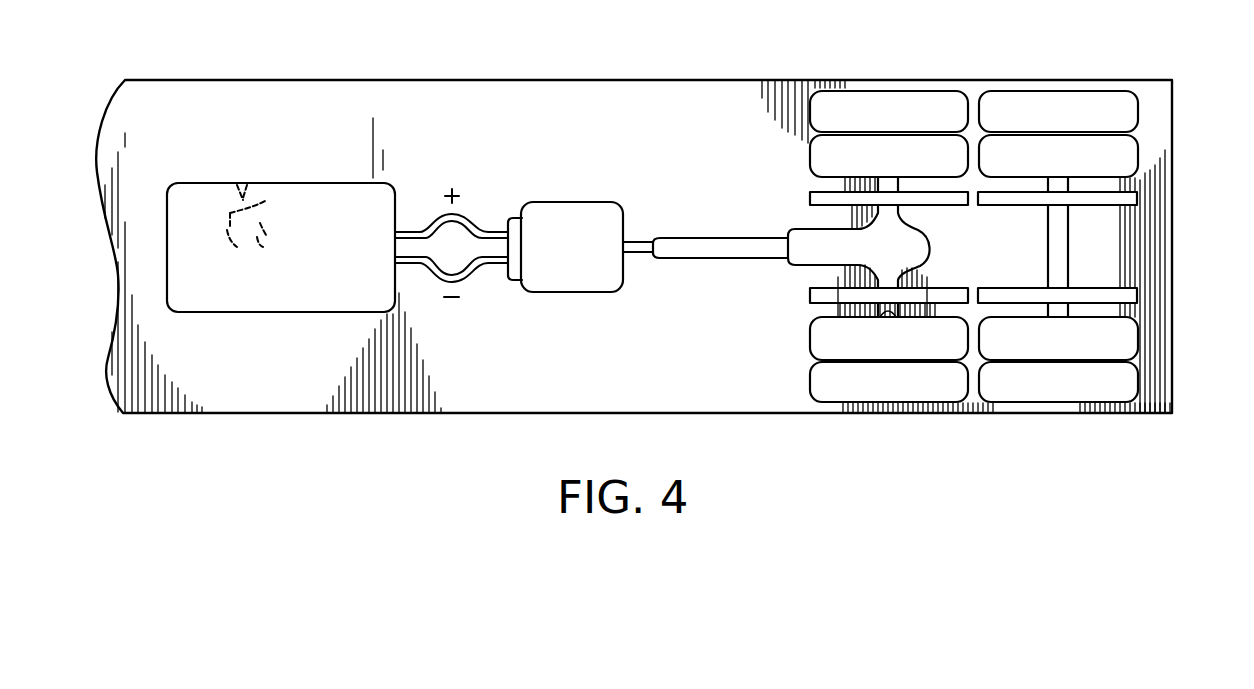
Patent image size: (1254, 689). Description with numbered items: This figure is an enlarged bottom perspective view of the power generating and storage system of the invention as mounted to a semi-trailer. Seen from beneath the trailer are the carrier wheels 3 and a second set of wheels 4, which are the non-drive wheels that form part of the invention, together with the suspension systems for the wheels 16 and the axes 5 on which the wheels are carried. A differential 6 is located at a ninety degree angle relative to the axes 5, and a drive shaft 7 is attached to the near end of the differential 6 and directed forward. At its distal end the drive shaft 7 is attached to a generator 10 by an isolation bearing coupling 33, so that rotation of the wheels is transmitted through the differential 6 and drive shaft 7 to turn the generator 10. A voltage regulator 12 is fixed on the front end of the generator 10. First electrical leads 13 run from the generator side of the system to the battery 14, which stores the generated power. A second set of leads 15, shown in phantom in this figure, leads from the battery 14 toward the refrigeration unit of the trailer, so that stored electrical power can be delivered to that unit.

The carrier wheels 3 is at (1135, 115).
The second set of wheels 4 is at (938, 98).
The axes 5 is at (892, 311).
The differential 6 is at (917, 247).
The drive shaft 7 is at (693, 250).
The generator 10 is at (602, 213).
The voltage regulator 12 is at (514, 266).
The first electrical leads 13 is at (492, 257).
The battery 14 is at (352, 288).
The second set of leads 15 is at (272, 200).
The suspension systems for the wheels 16 is at (810, 199).
The isolation bearing coupling 33 is at (657, 237).